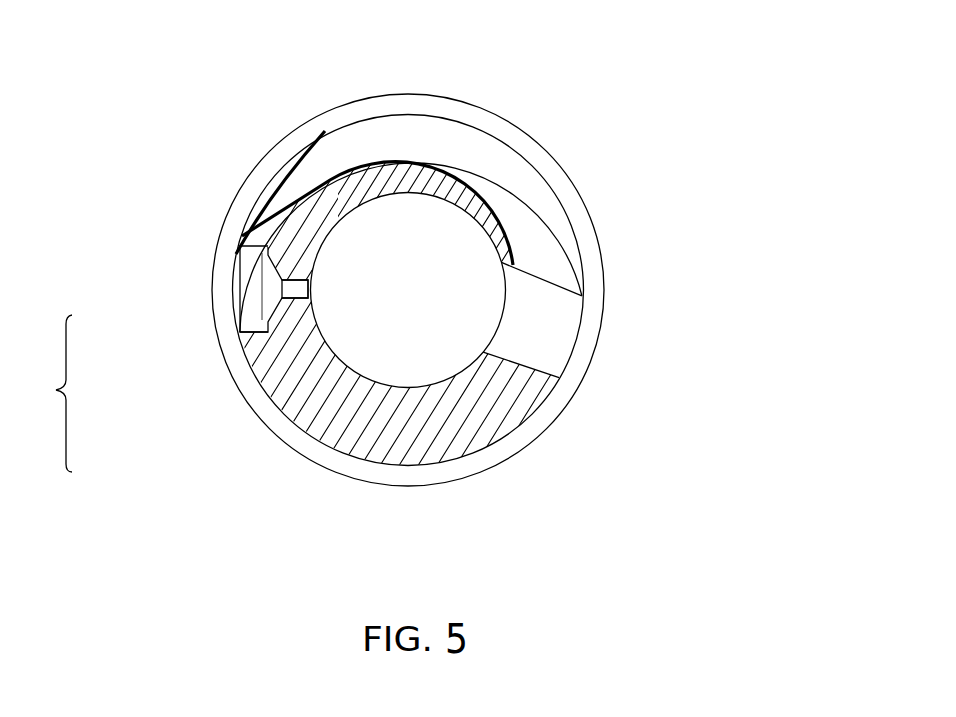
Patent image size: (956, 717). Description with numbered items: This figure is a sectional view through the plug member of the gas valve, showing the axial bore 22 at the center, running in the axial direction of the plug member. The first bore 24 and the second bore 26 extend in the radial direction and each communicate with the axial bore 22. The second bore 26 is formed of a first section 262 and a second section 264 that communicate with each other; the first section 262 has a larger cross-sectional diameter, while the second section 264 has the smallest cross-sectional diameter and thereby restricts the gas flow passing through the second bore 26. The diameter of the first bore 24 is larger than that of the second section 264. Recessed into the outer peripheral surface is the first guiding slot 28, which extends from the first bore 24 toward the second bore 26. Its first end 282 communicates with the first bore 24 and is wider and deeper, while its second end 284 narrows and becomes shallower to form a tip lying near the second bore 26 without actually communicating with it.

The axial bore 22 is at (437, 324).
The first bore 24 is at (548, 334).
The second bore 26 is at (159, 359).
The first section 262 is at (243, 298).
The second section 264 is at (292, 290).
The first guiding slot 28 is at (475, 150).
The first end 282 is at (556, 262).
The second end 284 is at (243, 236).